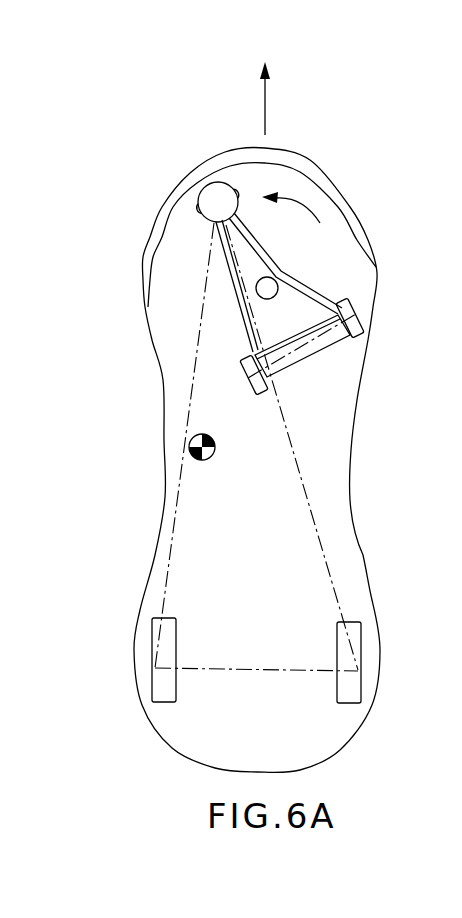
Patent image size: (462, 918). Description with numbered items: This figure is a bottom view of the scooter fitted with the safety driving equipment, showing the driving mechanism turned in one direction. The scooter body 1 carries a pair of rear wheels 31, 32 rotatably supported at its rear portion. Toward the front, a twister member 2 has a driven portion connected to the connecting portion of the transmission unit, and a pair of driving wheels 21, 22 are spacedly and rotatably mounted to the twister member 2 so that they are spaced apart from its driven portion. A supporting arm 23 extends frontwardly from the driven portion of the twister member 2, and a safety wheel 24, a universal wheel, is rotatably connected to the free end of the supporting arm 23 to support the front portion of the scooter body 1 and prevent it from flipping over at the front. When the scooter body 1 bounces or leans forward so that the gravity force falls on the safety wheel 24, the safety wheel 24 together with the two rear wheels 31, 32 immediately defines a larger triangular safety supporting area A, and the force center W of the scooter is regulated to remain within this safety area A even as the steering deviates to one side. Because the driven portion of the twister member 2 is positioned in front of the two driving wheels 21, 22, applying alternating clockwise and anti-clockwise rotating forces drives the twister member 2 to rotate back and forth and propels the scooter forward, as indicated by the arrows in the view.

The scooter body 1 is at (355, 520).
The twister member 2 is at (303, 307).
The driving wheel 21 is at (250, 370).
The driving wheel 22 is at (350, 315).
The supporting arm 23 is at (240, 248).
The safety wheel 24 is at (213, 194).
The rear wheel 31 is at (165, 676).
The rear wheel 32 is at (348, 689).
The force center W is at (188, 448).
The safety supporting area A is at (308, 488).